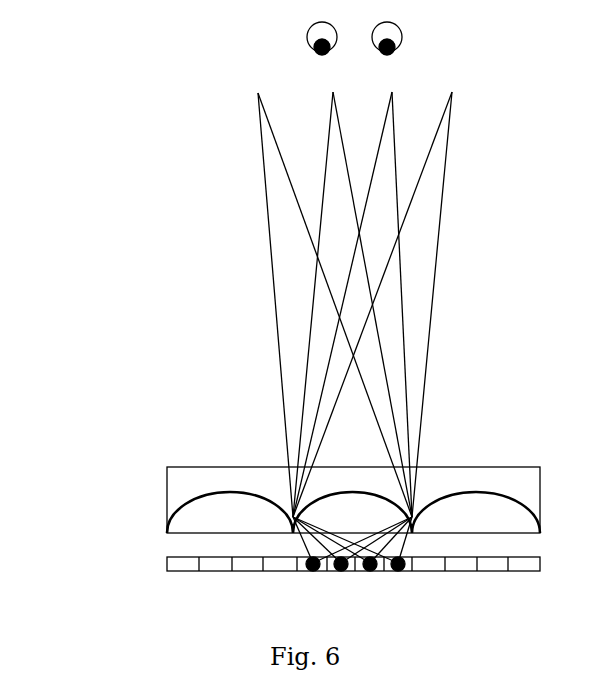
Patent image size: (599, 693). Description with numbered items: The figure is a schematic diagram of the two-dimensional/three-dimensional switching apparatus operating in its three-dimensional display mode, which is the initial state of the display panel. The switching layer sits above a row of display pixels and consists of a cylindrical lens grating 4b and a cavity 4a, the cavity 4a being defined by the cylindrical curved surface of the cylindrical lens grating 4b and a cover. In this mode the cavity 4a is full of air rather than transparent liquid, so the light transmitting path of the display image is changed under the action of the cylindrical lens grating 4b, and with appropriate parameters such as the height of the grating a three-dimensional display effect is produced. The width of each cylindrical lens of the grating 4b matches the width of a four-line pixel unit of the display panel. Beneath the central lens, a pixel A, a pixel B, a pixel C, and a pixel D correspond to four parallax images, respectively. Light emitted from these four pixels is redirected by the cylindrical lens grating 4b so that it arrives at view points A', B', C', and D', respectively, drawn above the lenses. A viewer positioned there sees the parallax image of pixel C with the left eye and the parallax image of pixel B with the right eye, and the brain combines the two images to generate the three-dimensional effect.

The cavity 4a is at (467, 477).
The cylindrical lens grating 4b is at (225, 515).
The pixel A is at (311, 586).
The pixel B is at (340, 586).
The pixel C is at (370, 586).
The pixel D is at (398, 586).
The view point A' is at (330, 291).
The view point B' is at (352, 291).
The view point C' is at (352, 291).
The view point D' is at (379, 291).